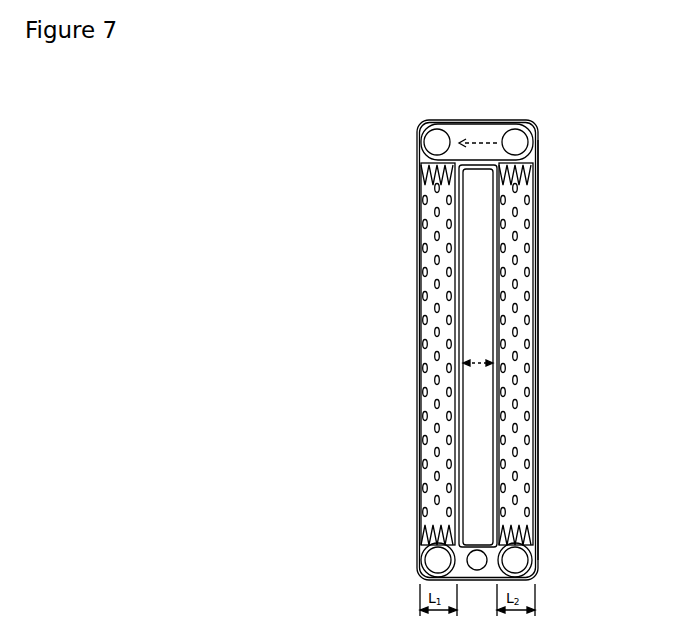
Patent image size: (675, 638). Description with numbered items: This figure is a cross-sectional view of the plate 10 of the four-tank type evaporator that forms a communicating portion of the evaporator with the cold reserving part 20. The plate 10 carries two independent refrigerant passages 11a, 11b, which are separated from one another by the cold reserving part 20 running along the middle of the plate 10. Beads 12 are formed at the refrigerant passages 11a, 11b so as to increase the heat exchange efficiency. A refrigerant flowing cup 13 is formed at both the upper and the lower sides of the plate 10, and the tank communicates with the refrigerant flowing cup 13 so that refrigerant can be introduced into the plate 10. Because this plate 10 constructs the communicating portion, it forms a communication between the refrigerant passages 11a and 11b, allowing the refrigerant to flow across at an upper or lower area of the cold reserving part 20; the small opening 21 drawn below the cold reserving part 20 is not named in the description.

The plate 10 is at (546, 94).
The refrigerant passage 11a is at (420, 205).
The refrigerant passage 11b is at (540, 209).
The beads 12 is at (539, 268).
The refrigerant flowing cup 13 is at (417, 133).
The cold reserving part 20 is at (480, 296).
The small hole 21 is at (477, 571).